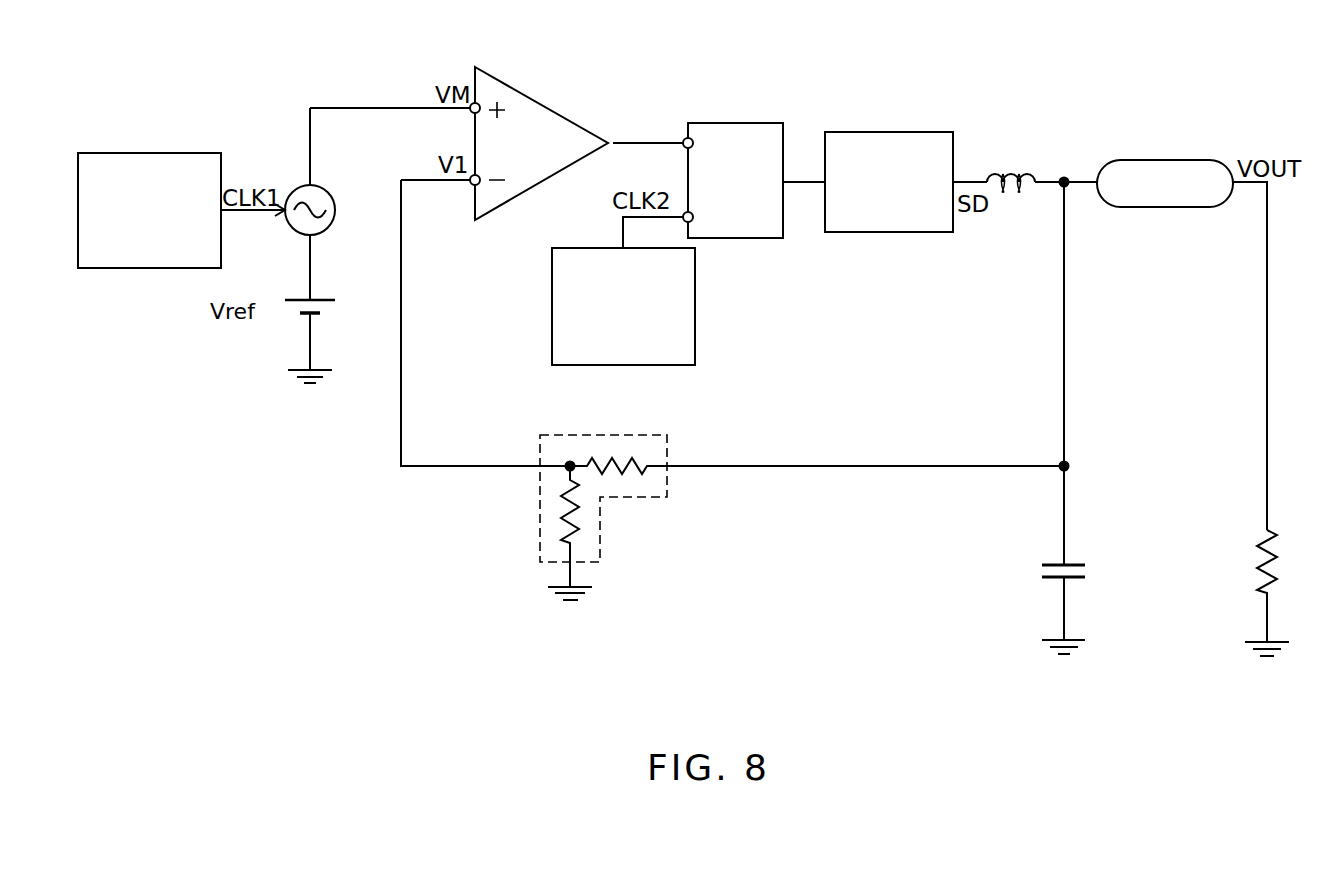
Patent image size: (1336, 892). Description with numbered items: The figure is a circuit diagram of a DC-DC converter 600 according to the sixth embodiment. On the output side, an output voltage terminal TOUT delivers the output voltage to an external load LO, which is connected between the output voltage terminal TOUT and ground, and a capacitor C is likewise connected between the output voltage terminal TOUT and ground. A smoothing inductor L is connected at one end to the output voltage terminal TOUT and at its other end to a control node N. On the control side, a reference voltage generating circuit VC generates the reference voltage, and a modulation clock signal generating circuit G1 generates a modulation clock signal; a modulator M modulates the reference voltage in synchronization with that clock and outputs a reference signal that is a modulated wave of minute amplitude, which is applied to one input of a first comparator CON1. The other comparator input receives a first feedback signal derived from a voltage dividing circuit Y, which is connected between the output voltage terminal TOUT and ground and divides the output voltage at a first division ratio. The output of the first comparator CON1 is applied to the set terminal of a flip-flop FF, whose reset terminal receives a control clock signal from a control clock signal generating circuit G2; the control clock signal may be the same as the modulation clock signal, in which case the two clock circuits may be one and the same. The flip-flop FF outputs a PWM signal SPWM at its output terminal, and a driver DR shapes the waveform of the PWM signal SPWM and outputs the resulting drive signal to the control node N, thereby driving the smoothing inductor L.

The modulation clock signal generating circuit G1 is at (150, 153).
The modulator M is at (335, 210).
The reference voltage generating circuit VC is at (335, 300).
The first comparator CON1 is at (543, 103).
The flip-flop FF is at (735, 122).
The PWM signal SPWM is at (805, 180).
The driver DR is at (888, 132).
The control node N is at (973, 180).
The smoothing inductor L is at (1012, 168).
The output voltage terminal TOUT is at (1165, 160).
The external load LO is at (1267, 537).
The capacitor C is at (1072, 563).
The voltage dividing circuit Y is at (603, 432).
The control clock signal generating circuit G2 is at (695, 292).
The DC-DC converter 600 is at (735, 704).